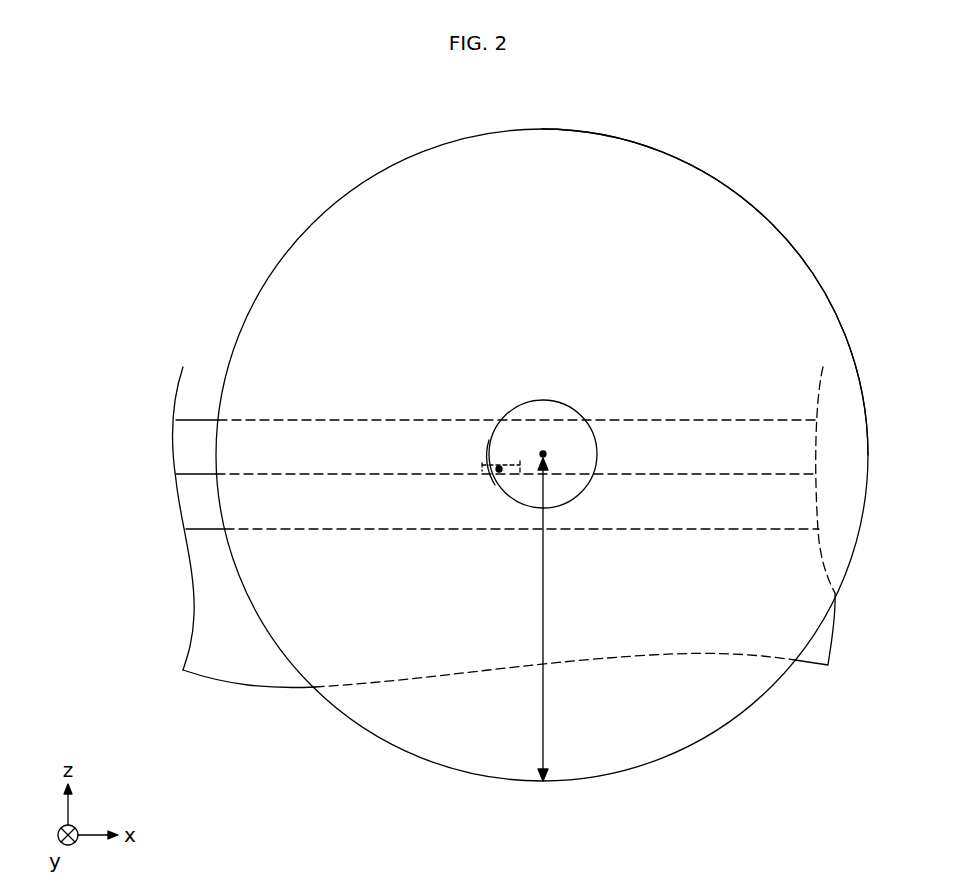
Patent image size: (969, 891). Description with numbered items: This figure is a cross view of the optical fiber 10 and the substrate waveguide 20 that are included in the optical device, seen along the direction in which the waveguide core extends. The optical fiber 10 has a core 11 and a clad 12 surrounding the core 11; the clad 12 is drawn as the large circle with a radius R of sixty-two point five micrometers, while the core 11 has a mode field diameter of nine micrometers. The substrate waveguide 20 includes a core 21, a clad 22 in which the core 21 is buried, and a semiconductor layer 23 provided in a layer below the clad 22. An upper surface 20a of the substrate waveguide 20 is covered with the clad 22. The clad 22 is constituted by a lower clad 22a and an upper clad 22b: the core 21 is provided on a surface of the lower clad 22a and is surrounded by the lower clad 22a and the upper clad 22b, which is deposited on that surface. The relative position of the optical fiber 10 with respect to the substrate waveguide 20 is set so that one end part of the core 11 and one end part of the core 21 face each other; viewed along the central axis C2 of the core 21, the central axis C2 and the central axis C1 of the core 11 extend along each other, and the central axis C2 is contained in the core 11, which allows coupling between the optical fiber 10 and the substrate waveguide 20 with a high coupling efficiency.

The optical fiber 10 is at (802, 176).
The core 11 is at (547, 400).
The clad 12 is at (673, 277).
The substrate waveguide 20 is at (131, 344).
The upper surface 20a is at (200, 420).
The core 21 is at (477, 471).
The clad 22 is at (86, 430).
The lower clad 22a is at (193, 507).
The upper clad 22b is at (192, 452).
The semiconductor layer 23 is at (215, 592).
The central axis C1 is at (546, 451).
The central axis C2 is at (496, 466).
The radius R is at (549, 619).